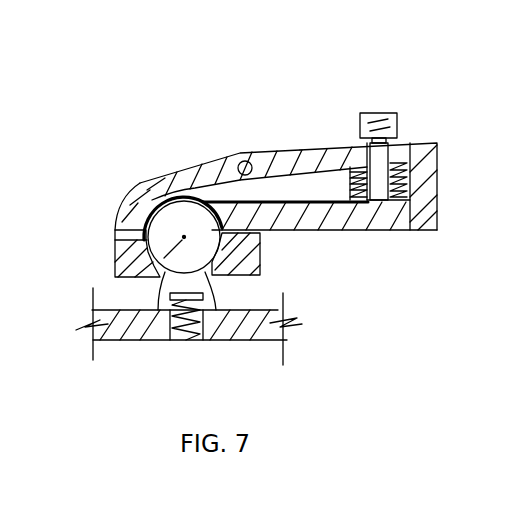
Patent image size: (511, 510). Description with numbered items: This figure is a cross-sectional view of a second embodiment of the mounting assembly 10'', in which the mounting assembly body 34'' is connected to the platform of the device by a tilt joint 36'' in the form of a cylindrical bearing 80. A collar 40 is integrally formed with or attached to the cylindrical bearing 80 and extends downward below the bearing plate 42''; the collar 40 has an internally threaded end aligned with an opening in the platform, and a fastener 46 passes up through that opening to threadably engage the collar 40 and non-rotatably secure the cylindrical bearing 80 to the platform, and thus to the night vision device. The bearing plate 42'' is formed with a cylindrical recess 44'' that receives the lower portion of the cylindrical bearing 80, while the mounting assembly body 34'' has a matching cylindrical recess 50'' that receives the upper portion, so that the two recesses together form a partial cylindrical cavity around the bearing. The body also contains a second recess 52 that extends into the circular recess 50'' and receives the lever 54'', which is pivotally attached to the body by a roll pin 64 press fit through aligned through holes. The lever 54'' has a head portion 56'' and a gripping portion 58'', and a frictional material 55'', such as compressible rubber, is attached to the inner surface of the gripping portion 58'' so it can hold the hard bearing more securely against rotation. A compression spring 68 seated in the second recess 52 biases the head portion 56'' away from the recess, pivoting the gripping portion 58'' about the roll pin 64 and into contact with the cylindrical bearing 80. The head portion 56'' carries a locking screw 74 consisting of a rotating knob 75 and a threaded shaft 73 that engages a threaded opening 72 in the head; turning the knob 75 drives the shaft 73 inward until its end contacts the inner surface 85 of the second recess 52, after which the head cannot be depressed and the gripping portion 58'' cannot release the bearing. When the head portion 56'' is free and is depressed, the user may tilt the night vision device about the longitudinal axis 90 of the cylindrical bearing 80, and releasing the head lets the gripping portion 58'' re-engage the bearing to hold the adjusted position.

The mounting assembly 10'' is at (271, 203).
The mounting assembly body 34'' is at (320, 248).
The tilt joint 36'' is at (183, 186).
The collar 40 is at (127, 336).
The bearing plate 42'' is at (265, 256).
The cylindrical recess 44'' is at (113, 246).
The fastener 46 is at (193, 340).
The cylindrical recess 50'' is at (257, 145).
The second recess 52 is at (316, 188).
The lever 54'' is at (233, 131).
The frictional material 55'' is at (143, 183).
The head portion 56'' is at (368, 145).
The gripping portion 58'' is at (109, 199).
The roll pin 64 is at (244, 160).
The compression spring 68 is at (353, 205).
The threaded opening 72 is at (403, 143).
The threaded shaft 73 is at (417, 139).
The locking screw 74 is at (388, 112).
The rotating knob 75 is at (380, 105).
The cylindrical bearing 80 is at (220, 297).
The inner surface 85 is at (367, 205).
The longitudinal axis 90 is at (155, 276).